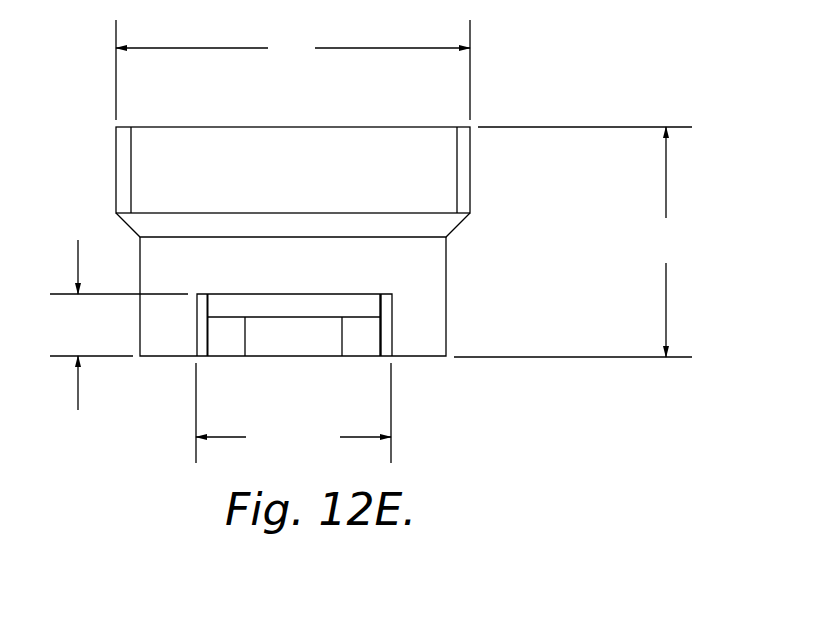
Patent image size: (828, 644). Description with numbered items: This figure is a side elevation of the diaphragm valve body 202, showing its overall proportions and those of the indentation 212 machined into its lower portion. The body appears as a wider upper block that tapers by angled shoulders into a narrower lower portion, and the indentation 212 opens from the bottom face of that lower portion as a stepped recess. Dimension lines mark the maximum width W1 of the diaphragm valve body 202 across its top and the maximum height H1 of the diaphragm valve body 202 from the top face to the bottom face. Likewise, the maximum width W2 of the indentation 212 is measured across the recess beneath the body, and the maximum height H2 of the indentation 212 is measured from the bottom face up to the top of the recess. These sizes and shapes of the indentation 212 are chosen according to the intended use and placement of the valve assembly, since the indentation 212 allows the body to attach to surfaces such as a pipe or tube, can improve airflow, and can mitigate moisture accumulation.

The diaphragm valve body 202 is at (463, 133).
The indentation 212 is at (295, 348).
The maximum width of the diaphragm valve body W1 is at (293, 70).
The maximum height of the diaphragm valve body H1 is at (573, 242).
The maximum height of the indentation H2 is at (119, 325).
The maximum width of the indentation W2 is at (293, 413).